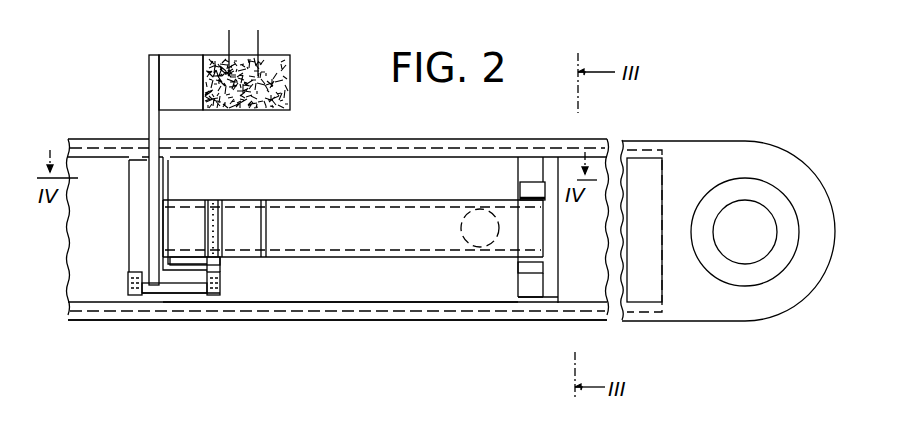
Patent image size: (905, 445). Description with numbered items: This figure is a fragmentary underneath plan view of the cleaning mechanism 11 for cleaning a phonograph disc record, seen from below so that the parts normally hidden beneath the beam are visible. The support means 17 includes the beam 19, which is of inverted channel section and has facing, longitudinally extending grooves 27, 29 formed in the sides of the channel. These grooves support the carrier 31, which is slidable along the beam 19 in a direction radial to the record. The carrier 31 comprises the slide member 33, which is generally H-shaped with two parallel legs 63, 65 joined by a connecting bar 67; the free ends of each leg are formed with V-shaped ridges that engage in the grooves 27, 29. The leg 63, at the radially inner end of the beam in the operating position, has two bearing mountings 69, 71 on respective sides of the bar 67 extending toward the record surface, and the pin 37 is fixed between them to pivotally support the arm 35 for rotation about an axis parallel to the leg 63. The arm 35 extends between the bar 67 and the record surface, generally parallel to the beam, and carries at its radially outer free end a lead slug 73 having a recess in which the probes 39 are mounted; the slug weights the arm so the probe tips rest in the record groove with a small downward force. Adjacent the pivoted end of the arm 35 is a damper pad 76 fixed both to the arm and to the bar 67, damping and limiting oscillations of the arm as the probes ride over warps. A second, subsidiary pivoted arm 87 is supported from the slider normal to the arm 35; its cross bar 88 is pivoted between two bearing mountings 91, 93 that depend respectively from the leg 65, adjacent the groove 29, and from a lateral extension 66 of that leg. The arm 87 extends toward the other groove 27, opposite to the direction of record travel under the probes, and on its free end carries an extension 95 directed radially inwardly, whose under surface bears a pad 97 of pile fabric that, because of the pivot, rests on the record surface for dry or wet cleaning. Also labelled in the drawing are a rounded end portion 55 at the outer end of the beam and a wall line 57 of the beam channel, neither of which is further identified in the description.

The cleaning mechanism 11 is at (172, 377).
The support means 17 is at (90, 138).
The beam 19 is at (85, 323).
The groove 27 is at (401, 138).
The groove 29 is at (337, 315).
The carrier 31 is at (498, 272).
The slide member 33 is at (168, 173).
The arm 35 is at (368, 243).
The pin 37 is at (537, 258).
The probes 39 is at (222, 244).
The mounting eye 55 is at (755, 313).
The tube centerline 57 is at (323, 138).
The leg 63 is at (558, 224).
The leg 65 is at (128, 204).
The lateral extension 66 is at (189, 293).
The connecting bar 67 is at (375, 254).
The bearing mounting 69 is at (520, 192).
The bearing mounting 71 is at (528, 276).
The lead slug 73 is at (253, 235).
The damper pad 76 is at (461, 228).
The subsidiary pivoted arm 87 is at (150, 117).
The cross bar 88 is at (157, 293).
The bearing mounting 91 is at (135, 297).
The bearing mounting 93 is at (213, 297).
The extension 95 is at (172, 62).
The pad 97 is at (289, 62).